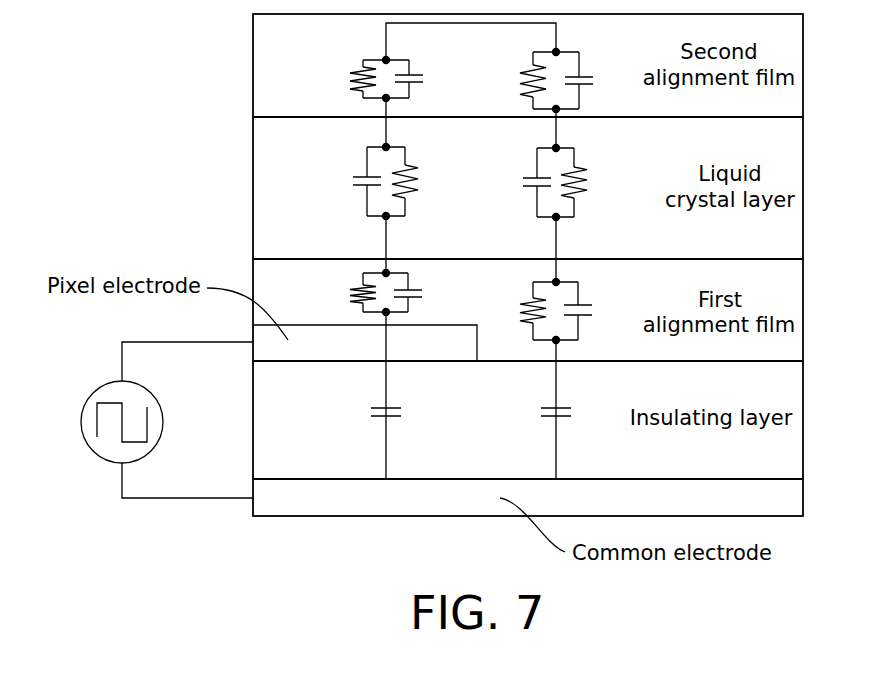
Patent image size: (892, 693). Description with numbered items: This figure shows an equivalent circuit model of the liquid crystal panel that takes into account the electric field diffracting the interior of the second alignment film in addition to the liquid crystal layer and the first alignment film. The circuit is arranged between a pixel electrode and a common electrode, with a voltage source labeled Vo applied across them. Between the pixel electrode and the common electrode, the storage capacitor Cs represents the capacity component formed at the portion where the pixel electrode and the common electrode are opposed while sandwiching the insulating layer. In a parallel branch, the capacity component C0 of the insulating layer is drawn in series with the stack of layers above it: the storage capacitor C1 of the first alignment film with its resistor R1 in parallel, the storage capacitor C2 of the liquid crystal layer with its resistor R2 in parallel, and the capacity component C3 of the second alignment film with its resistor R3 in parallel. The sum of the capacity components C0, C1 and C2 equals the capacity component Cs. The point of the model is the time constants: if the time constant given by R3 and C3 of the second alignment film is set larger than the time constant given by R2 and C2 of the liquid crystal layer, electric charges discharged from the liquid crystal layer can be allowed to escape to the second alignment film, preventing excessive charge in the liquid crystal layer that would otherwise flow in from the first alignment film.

The resistor of first alignment film R1 is at (433, 306).
The capacity component of first alignment film C1 is at (511, 306).
The resistor of liquid crystal layer R2 is at (453, 182).
The capacity component of liquid crystal layer C2 is at (485, 186).
The resistor of second alignment film R3 is at (432, 75).
The capacity component of second alignment film C3 is at (512, 79).
The storage capacitor Cs is at (398, 427).
The capacity component of insulating layer C0 is at (569, 427).
The applied voltage source Vo is at (167, 420).